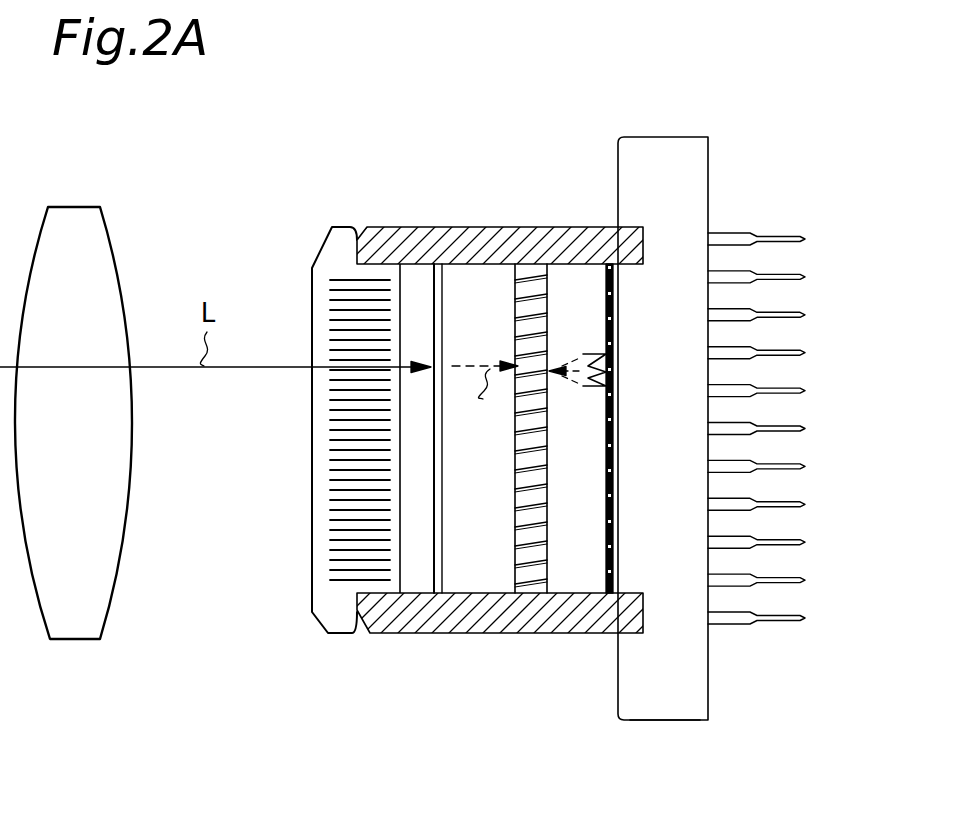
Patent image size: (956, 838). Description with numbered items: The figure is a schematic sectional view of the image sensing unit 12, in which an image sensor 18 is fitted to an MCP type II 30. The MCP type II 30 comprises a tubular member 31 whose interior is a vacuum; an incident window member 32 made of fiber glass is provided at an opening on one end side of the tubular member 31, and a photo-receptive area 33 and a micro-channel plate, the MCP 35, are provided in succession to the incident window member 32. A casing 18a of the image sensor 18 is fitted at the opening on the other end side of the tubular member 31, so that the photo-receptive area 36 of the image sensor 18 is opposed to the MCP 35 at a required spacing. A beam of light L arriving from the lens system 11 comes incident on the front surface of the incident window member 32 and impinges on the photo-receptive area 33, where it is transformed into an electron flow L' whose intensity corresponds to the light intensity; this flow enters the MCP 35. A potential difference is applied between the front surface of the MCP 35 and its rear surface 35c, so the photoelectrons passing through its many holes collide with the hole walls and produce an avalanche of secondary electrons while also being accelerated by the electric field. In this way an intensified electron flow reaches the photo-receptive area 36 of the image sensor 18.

The lens system 11 is at (116, 245).
The image sensing unit 12 is at (457, 692).
The image sensor 18 is at (715, 456).
The casing 18a is at (665, 722).
The MCP type II 30 is at (503, 473).
The tubular member 31 is at (547, 637).
The incident window member 32 is at (324, 636).
The photo-receptive area 33 is at (441, 268).
The micro-channel plate (MCP) 35 is at (544, 382).
The rear surface 35c is at (548, 454).
The photo-receptive area 36 is at (607, 598).